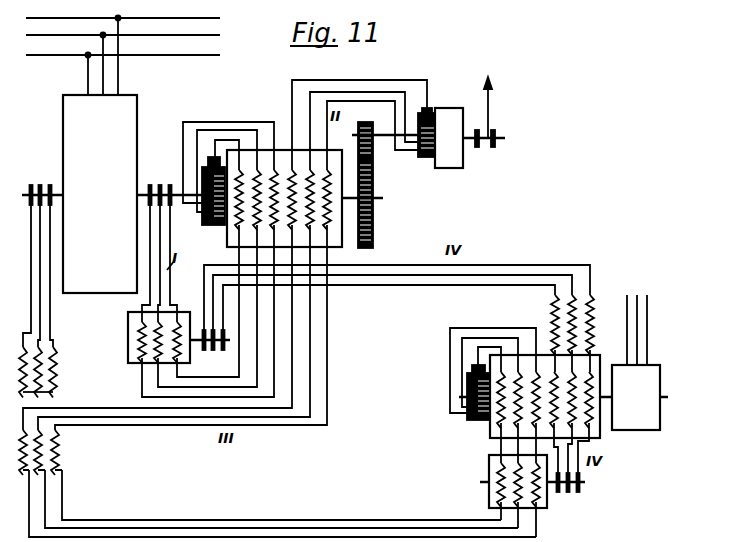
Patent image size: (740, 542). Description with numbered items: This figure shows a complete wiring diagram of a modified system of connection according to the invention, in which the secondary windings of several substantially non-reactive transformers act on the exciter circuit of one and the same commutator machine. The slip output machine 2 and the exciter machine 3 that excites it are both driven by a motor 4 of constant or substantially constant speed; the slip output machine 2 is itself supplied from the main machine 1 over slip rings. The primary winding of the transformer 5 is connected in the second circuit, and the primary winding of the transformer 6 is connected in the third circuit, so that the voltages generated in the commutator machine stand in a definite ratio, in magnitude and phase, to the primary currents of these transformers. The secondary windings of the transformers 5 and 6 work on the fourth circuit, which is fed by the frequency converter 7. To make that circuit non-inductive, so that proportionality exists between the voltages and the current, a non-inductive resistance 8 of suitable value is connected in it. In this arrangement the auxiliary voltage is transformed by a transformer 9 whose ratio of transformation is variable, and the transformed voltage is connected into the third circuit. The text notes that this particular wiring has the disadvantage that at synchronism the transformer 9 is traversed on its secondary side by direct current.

The main motor 1 is at (128, 123).
The slip output machine 2 is at (230, 229).
The exciter machine 3 is at (494, 429).
The motor 4 is at (633, 430).
The transformer 5 is at (132, 340).
The transformer 6 is at (489, 494).
The frequency converter 7 is at (448, 112).
The non-inductive resistance 8 is at (592, 314).
The transformer 9 is at (50, 403).